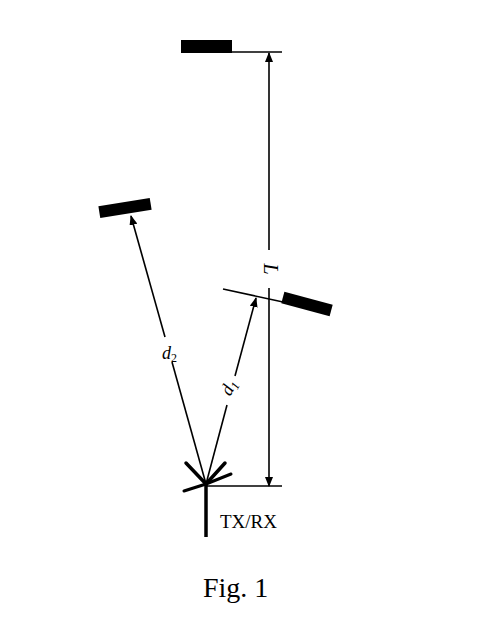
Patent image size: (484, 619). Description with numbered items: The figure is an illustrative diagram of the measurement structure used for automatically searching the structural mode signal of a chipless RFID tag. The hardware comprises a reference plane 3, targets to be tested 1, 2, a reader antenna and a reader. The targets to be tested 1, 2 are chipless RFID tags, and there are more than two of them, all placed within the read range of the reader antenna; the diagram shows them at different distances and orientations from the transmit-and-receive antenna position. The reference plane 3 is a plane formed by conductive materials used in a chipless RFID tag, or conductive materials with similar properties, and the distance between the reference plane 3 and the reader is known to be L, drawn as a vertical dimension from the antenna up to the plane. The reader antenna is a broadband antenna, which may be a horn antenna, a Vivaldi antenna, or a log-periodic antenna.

The target to be tested 1 is at (124, 187).
The target to be tested 2 is at (307, 281).
The reference plane 3 is at (206, 27).